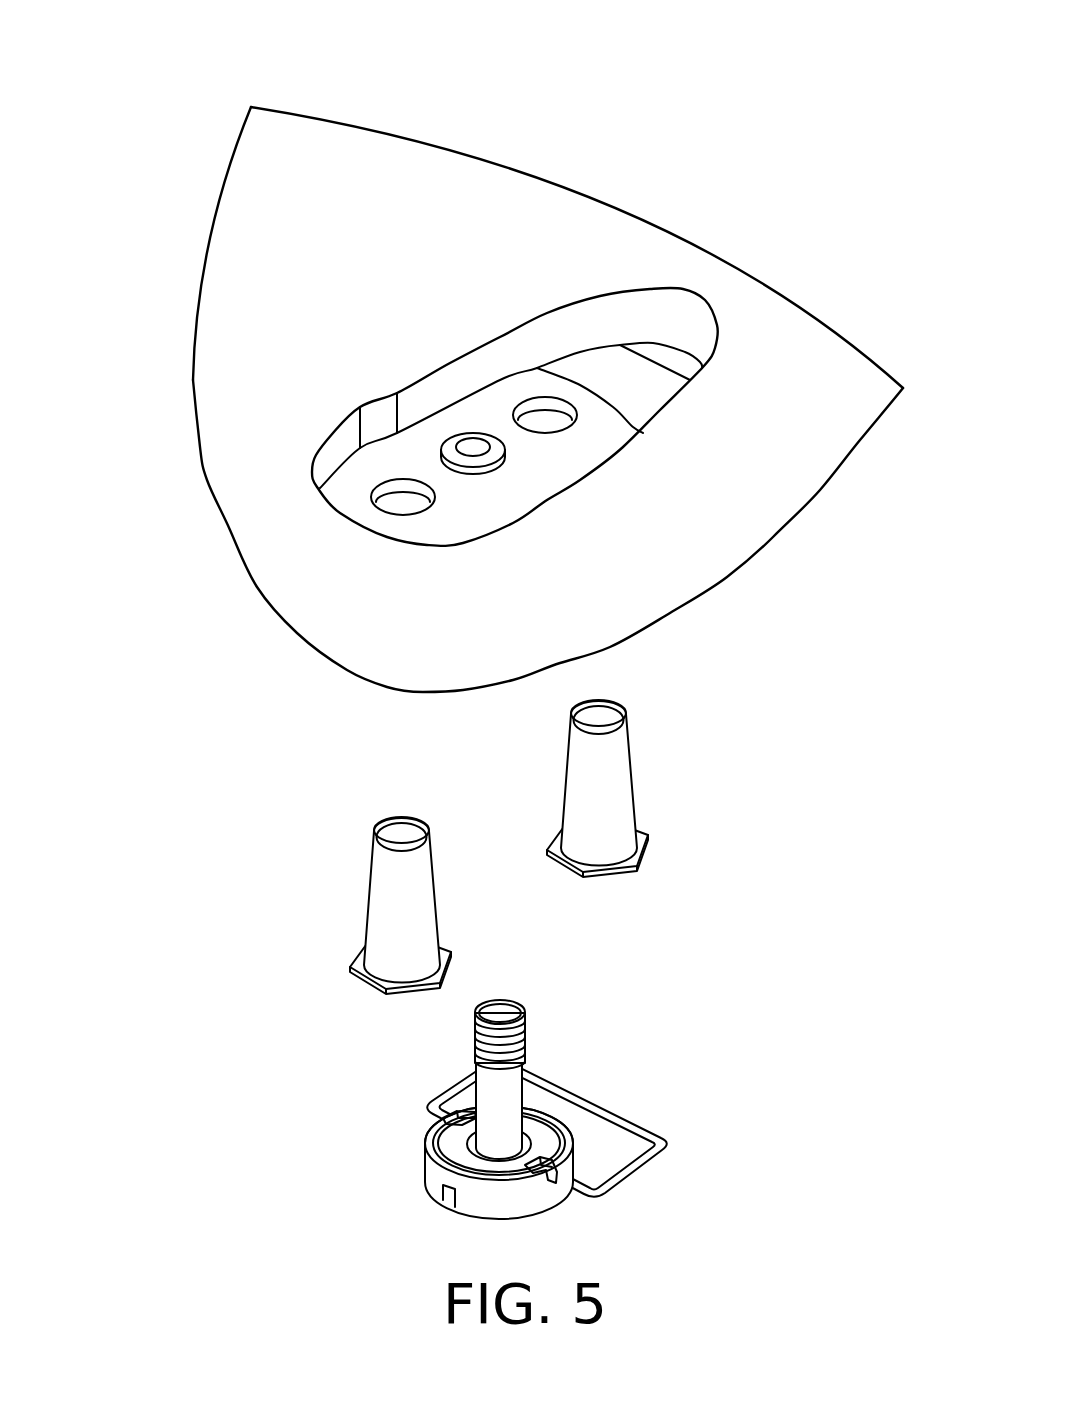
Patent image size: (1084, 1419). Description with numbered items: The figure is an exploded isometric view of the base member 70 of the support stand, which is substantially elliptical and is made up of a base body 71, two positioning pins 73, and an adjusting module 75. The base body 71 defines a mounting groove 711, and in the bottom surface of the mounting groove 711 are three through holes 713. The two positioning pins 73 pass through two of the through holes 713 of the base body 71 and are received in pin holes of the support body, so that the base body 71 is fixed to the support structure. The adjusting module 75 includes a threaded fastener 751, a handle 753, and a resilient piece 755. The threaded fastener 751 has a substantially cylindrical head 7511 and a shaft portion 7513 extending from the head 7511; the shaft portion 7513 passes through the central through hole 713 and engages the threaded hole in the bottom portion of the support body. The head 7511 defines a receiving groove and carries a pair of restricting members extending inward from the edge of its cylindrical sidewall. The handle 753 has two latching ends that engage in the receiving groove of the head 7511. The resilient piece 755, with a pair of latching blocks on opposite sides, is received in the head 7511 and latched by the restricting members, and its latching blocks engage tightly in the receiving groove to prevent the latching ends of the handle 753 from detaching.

The base member 70 is at (494, 624).
The base body 71 is at (494, 399).
The mounting groove 711 is at (497, 357).
The through holes 713 is at (548, 420).
The positioning pins 73 is at (614, 781).
The adjusting module 75 is at (490, 1107).
The threaded fastener 751 is at (396, 1177).
The head 7511 is at (477, 1197).
The shaft portion 7513 is at (493, 1113).
The handle 753 is at (587, 1104).
The resilient piece 755 is at (547, 1143).